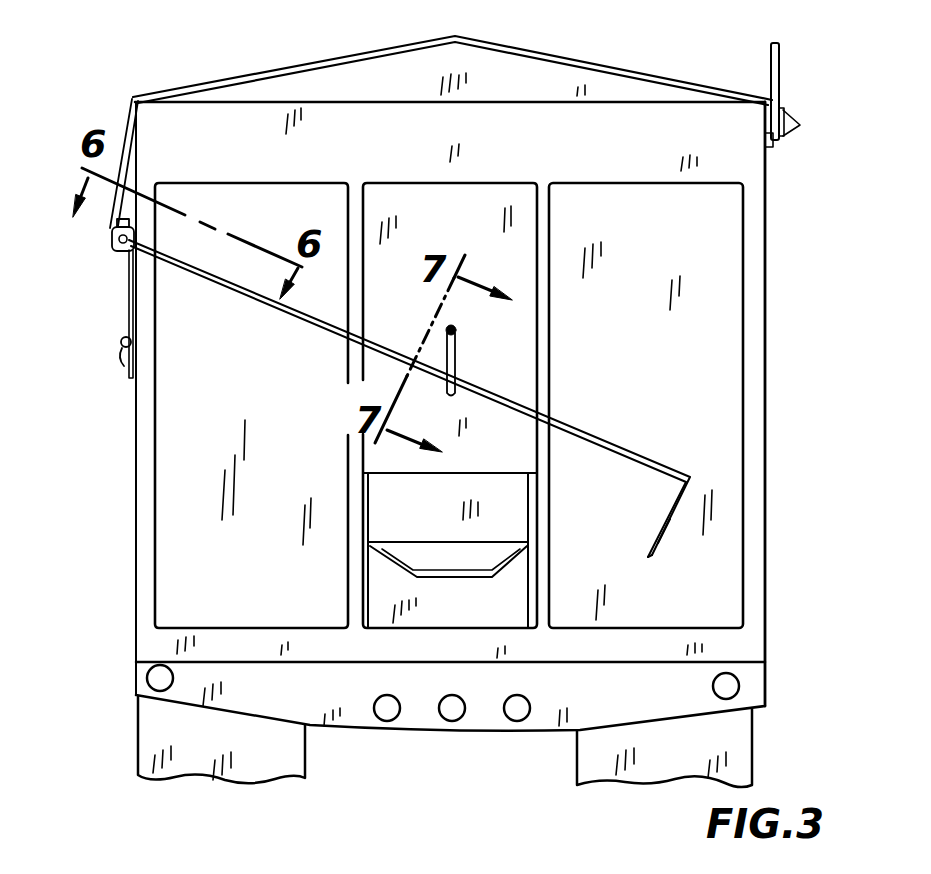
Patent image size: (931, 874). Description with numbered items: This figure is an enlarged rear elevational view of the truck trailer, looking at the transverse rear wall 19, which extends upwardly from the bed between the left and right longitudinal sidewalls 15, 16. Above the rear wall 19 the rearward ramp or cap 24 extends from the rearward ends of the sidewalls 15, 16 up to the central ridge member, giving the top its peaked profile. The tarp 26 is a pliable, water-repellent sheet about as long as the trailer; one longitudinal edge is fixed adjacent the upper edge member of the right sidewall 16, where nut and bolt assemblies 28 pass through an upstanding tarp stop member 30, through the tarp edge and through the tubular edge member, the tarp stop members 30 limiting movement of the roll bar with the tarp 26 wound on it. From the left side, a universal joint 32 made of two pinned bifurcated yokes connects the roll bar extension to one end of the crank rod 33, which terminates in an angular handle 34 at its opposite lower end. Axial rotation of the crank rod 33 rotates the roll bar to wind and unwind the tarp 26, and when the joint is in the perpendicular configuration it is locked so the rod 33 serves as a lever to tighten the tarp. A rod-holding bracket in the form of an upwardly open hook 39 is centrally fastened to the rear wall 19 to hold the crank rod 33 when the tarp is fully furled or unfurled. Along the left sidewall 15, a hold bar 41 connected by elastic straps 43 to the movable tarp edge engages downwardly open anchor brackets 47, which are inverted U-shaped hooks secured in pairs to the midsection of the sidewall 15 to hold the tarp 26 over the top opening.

The left longitudinal sidewall 15 is at (137, 503).
The right longitudinal sidewall 16 is at (766, 518).
The rear wall 19 is at (723, 315).
The rearward ramp or cap 24 is at (500, 74).
The tarp 26 is at (640, 73).
The nut and bolt assembly 28 is at (800, 125).
The tarp stop member 30 is at (780, 76).
The universal joint 32 is at (108, 240).
The crank rod 33 is at (622, 448).
The angular handle 34 is at (665, 514).
The hook 39 is at (457, 346).
The hold bar 41 is at (128, 356).
The elastic strap 43 is at (128, 288).
The anchor bracket 47 is at (120, 343).